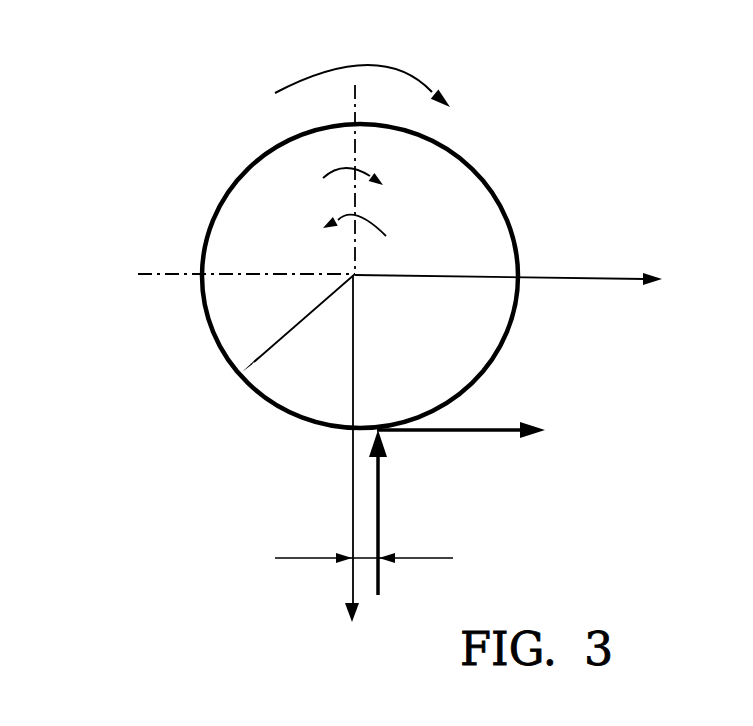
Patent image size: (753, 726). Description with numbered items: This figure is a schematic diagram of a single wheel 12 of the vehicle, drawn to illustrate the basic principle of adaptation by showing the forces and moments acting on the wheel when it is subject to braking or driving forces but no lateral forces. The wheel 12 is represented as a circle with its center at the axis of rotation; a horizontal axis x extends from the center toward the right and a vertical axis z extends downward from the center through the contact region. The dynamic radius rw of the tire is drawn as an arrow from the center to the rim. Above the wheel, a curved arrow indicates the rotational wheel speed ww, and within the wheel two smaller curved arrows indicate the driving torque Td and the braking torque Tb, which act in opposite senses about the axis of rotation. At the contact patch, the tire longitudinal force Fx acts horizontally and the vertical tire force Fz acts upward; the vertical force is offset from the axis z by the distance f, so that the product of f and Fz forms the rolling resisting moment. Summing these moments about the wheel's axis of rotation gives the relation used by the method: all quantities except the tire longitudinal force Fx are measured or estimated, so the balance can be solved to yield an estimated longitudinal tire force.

The wheel 12 is at (80, 519).
The longitudinal axis x is at (517, 260).
The vertical axis z is at (337, 460).
The dynamic radius of the tire rw is at (298, 323).
The rotational wheel speed ww is at (362, 59).
The driving torque Td is at (376, 183).
The braking torque Tb is at (376, 241).
The tire longitudinal force Fx is at (465, 403).
The vertical tire force Fz is at (402, 512).
The rolling resistance offset f is at (364, 536).